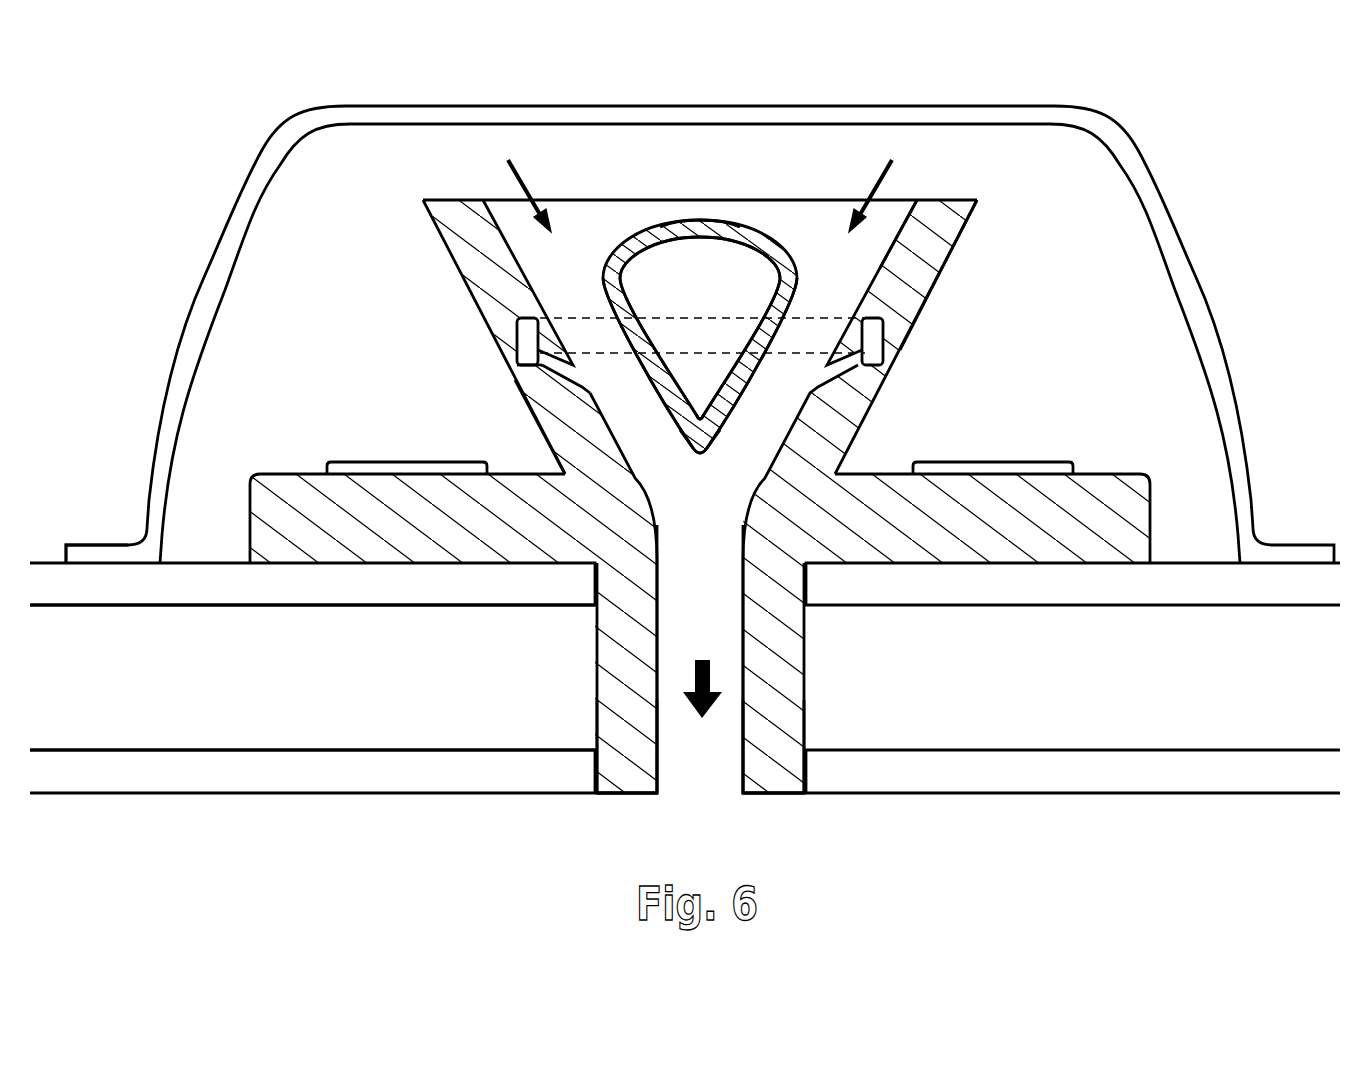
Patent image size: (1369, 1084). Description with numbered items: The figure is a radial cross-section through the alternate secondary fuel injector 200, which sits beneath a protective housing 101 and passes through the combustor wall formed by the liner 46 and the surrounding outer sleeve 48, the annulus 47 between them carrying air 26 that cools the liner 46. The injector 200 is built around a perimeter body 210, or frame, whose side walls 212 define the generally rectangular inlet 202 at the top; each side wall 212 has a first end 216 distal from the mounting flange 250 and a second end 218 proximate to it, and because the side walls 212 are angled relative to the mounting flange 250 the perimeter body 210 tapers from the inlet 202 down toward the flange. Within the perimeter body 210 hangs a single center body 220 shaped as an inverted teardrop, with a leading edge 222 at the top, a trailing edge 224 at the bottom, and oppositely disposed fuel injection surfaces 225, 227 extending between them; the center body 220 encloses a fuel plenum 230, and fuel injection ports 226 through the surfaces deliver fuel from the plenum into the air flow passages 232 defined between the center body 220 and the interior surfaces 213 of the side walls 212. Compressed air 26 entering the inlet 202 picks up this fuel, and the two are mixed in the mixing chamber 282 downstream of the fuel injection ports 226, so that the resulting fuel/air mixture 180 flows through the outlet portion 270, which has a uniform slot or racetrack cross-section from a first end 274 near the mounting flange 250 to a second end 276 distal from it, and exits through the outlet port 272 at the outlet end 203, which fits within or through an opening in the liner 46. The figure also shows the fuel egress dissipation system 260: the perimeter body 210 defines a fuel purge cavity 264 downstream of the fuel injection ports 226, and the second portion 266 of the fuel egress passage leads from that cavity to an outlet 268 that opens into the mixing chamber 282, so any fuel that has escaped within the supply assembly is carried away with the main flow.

The AFS injector 200 is at (487, 140).
The protective housing 101 is at (103, 545).
The inlet 202 is at (405, 193).
The first end 216 is at (458, 223).
The side walls 212 is at (945, 232).
The perimeter body 210 is at (962, 284).
The interior surfaces 213 is at (905, 205).
The air 26 is at (542, 162).
The center body 220 is at (756, 198).
The leading edge 222 is at (700, 215).
The fuel plenum 230 is at (677, 293).
The fuel injection ports 226 is at (645, 337).
The fuel injection surface 227 is at (795, 292).
The trailing edge 224 is at (702, 457).
The fuel purge cavity 264 is at (528, 333).
The fuel egress dissipation system 260 is at (845, 368).
The second portion 266 is at (532, 375).
The outlet 268 is at (578, 373).
The air flow passages 232 is at (752, 402).
The second end 218 is at (565, 445).
The fuel injection surface 225 is at (673, 420).
The mounting flange 250 is at (965, 495).
The outer sleeve 48 is at (110, 590).
The liner 46 is at (260, 778).
The annulus 47 is at (254, 692).
The first end 274 is at (630, 573).
The second end 276 is at (620, 745).
The outlet portion 270 is at (798, 648).
The outlet end 203 is at (790, 742).
The mixing chamber 282 is at (677, 573).
The fuel/air mixture 180 is at (705, 658).
The outlet port 272 is at (725, 815).